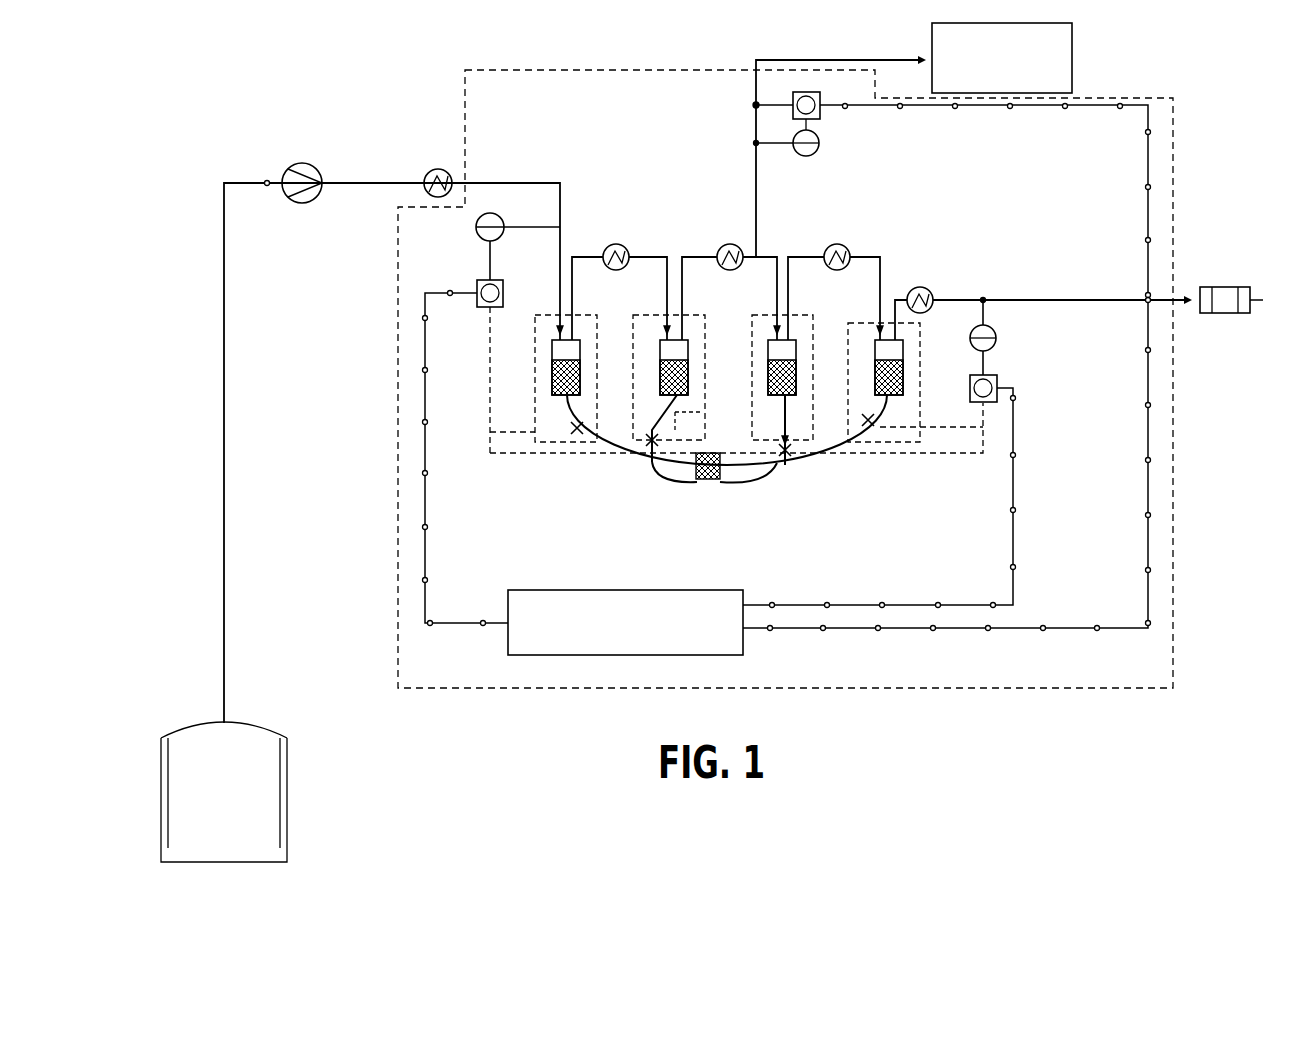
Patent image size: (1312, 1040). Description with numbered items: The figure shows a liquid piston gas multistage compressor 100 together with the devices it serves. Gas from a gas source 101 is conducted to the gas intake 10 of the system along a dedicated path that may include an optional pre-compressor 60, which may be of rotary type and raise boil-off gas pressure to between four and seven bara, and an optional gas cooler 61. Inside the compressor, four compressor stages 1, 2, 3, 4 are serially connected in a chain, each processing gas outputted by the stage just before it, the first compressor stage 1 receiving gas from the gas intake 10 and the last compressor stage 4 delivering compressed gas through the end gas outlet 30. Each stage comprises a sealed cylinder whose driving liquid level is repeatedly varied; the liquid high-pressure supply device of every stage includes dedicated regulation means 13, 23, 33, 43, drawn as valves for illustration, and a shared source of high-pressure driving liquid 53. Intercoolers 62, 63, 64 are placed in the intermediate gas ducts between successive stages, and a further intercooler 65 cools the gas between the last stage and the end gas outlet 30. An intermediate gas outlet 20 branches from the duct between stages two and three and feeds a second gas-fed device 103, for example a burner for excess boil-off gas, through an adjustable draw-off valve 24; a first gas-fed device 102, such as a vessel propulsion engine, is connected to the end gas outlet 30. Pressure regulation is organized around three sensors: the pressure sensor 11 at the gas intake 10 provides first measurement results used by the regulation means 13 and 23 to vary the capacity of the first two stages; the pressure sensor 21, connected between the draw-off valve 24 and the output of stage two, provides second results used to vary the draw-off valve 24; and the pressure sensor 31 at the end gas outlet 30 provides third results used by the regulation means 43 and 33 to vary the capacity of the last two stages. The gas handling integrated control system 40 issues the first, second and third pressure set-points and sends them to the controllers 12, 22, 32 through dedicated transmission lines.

The compressor stage 1 is at (581, 316).
The compressor stage 2 is at (690, 316).
The compressor stage 3 is at (796, 316).
The compressor stage 4 is at (866, 323).
The gas intake 10 is at (523, 182).
The gas pressure sensor 11 is at (477, 233).
The controller 12 is at (500, 279).
The regulation means 13 is at (578, 436).
The intermediate gas outlet 20 is at (755, 78).
The gas pressure sensor 21 is at (820, 150).
The controller 22 is at (822, 111).
The regulation means 23 is at (662, 443).
The draw-off valve 24 is at (754, 109).
The end gas outlet 30 is at (1055, 297).
The gas pressure sensor 31 is at (997, 339).
The controller 32 is at (998, 383).
The regulation means 33 is at (788, 468).
The gas handling integrated control system 40 is at (582, 588).
The regulation means 43 is at (868, 430).
The source of high-pressure driving liquid 53 is at (708, 482).
The pre-compressor 60 is at (300, 164).
The gas cooler 61 is at (437, 169).
The intercooler 62 is at (620, 244).
The intercooler 63 is at (725, 244).
The intercooler 64 is at (840, 244).
The intercooler 65 is at (924, 288).
The liquid piston gas multistage compressor 100 is at (1178, 152).
The gas source 101 is at (193, 725).
The first gas-fed device 102 is at (1240, 287).
The second gas-fed device 103 is at (1074, 50).